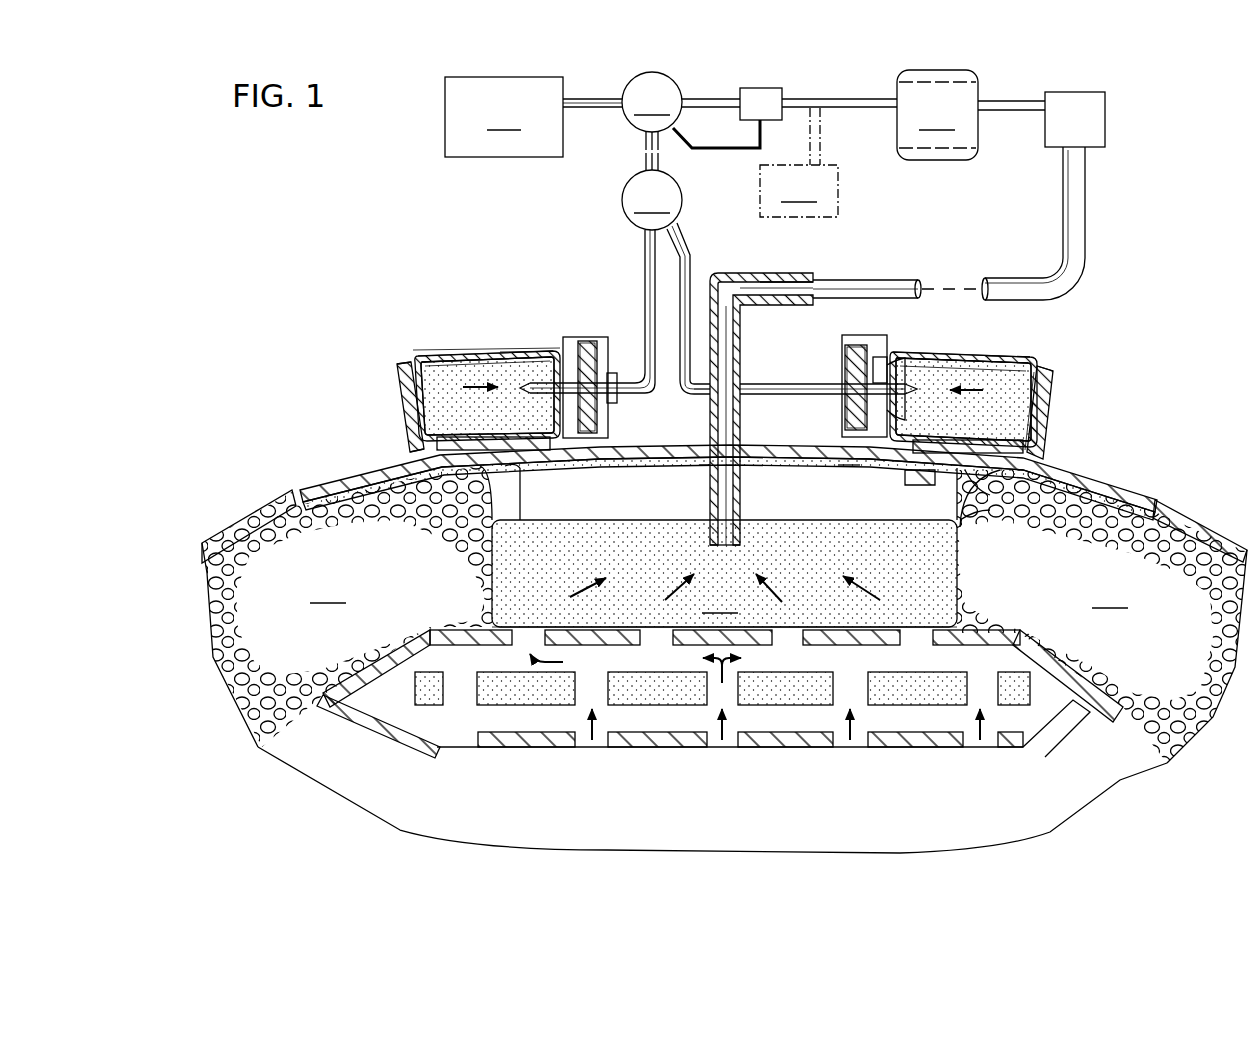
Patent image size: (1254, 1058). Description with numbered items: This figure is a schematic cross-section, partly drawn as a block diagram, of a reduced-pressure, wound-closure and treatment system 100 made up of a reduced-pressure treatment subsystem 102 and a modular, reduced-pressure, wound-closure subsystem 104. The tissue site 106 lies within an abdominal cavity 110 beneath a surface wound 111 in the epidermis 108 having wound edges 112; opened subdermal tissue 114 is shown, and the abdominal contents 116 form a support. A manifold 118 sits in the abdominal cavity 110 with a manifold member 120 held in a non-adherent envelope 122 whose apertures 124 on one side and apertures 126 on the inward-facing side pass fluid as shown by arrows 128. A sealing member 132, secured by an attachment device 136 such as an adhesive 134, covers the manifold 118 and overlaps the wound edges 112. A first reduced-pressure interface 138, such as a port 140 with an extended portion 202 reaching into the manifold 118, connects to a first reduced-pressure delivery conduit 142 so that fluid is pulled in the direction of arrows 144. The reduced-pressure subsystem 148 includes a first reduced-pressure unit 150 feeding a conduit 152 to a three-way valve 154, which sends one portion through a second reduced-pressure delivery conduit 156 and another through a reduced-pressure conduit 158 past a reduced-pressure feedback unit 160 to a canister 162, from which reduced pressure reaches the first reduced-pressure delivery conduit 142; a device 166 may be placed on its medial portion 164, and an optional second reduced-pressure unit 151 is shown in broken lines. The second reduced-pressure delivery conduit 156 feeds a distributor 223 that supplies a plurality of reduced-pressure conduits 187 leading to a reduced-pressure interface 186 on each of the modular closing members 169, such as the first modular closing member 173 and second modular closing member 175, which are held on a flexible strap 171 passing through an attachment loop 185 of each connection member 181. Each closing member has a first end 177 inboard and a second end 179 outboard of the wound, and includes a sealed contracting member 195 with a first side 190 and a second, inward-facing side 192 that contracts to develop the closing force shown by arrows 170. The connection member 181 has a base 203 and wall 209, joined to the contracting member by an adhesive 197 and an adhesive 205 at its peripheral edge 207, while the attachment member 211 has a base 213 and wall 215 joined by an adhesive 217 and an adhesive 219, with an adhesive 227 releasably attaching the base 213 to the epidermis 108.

The reduced-pressure, wound-closure and treatment system 100 is at (326, 208).
The reduced-pressure treatment subsystem 102 is at (967, 566).
The modular, reduced-pressure, wound-closure subsystem 104 is at (454, 293).
The tissue site 106 is at (704, 757).
The epidermis 108 is at (1198, 530).
The abdominal cavity 110 is at (1115, 740).
The surface wound 111 is at (532, 475).
The wound edges 112 is at (525, 490).
The subdermal tissue 114 is at (724, 614).
The abdominal contents 116 is at (328, 705).
The manifold 118 is at (724, 573).
The manifold member 120 is at (432, 690).
The non-adherent envelope 122 is at (768, 748).
The apertures 124 is at (525, 636).
The apertures 126 is at (578, 748).
The arrows 128 is at (548, 690).
The sealing member 132 is at (290, 496).
The adhesive 134 is at (298, 505).
The attachment device 136 is at (684, 466).
The first reduced-pressure interface 138 is at (713, 273).
The port 140 is at (811, 272).
The first reduced-pressure delivery conduit 142 is at (897, 278).
The arrows 144 is at (580, 590).
The reduced-pressure subsystem 148 is at (603, 93).
The first reduced-pressure unit 150 is at (504, 117).
The second reduced-pressure unit 151 is at (799, 162).
The conduit 152 is at (606, 110).
The three-way valve 154 is at (652, 102).
The second reduced-pressure delivery conduit 156 is at (660, 160).
The reduced-pressure conduit 158 is at (706, 95).
The reduced-pressure feedback unit 160 is at (762, 88).
The canister 162 is at (937, 115).
The medial portion 164 is at (1086, 243).
The device 166 is at (1086, 92).
The modular closing members 169 is at (436, 350).
The arrows 170 is at (726, 399).
The flexible strap 171 is at (587, 345).
The first modular closing member 173 is at (517, 350).
The second modular closing member 175 is at (1012, 356).
The first end 177 is at (585, 338).
The second end 179 is at (400, 388).
The connection member 181 is at (843, 345).
The attachment loop 185 is at (870, 352).
The reduced-pressure interface 186 is at (613, 378).
The reduced-pressure conduits 187 is at (688, 255).
The first side 190 is at (490, 358).
The second, inward-facing side 192 is at (470, 452).
The sealed contracting member 195 is at (468, 364).
The adhesive 197 is at (963, 528).
The extended portion 202 is at (708, 397).
The base 203 is at (915, 476).
The adhesive 205 is at (893, 363).
The peripheral edge 207 is at (902, 374).
The wall 209 is at (855, 466).
The attachment member 211 is at (405, 432).
The base 213 is at (488, 472).
The wall 215 is at (402, 410).
The adhesive 217 is at (970, 472).
The adhesive 219 is at (1050, 390).
The distributor 223 is at (652, 200).
The adhesive 227 is at (1032, 463).